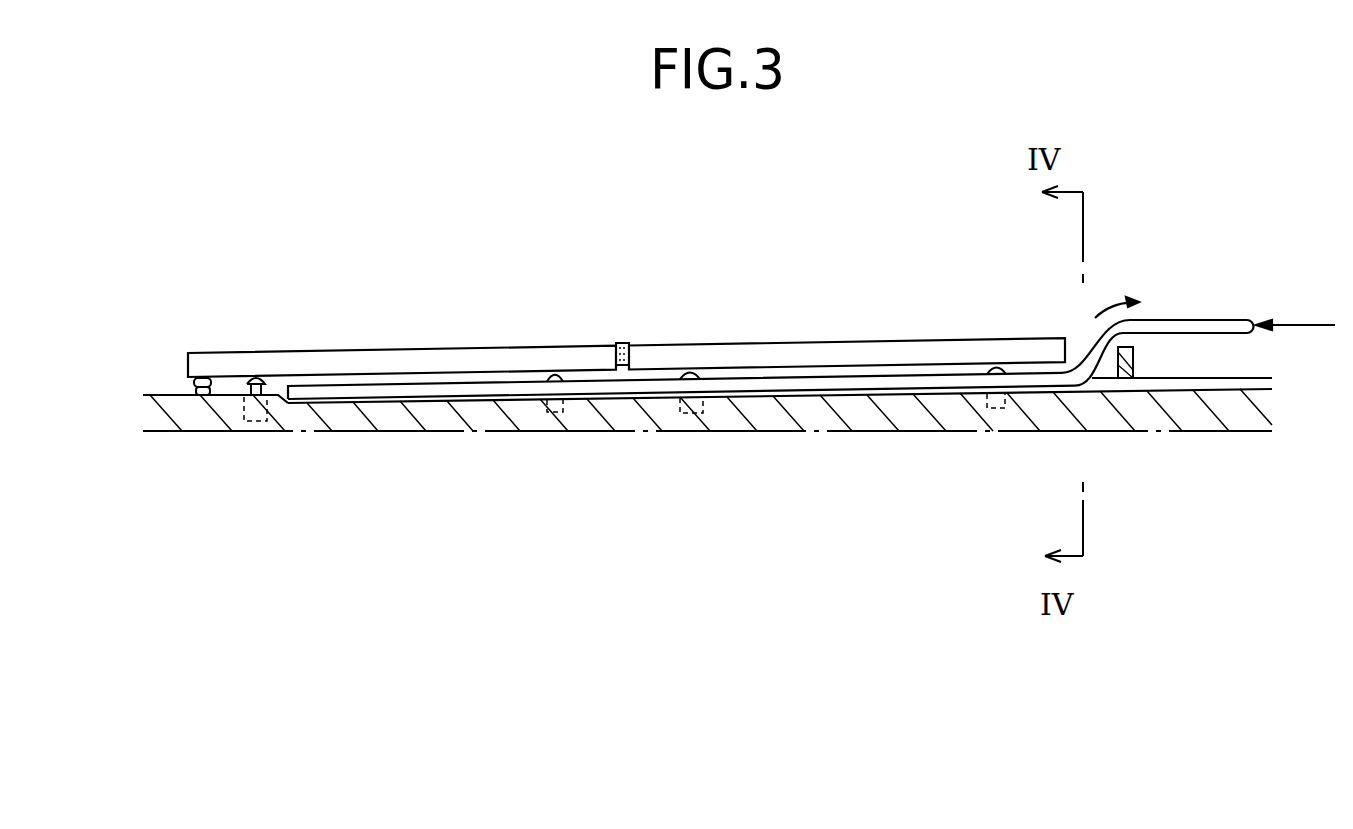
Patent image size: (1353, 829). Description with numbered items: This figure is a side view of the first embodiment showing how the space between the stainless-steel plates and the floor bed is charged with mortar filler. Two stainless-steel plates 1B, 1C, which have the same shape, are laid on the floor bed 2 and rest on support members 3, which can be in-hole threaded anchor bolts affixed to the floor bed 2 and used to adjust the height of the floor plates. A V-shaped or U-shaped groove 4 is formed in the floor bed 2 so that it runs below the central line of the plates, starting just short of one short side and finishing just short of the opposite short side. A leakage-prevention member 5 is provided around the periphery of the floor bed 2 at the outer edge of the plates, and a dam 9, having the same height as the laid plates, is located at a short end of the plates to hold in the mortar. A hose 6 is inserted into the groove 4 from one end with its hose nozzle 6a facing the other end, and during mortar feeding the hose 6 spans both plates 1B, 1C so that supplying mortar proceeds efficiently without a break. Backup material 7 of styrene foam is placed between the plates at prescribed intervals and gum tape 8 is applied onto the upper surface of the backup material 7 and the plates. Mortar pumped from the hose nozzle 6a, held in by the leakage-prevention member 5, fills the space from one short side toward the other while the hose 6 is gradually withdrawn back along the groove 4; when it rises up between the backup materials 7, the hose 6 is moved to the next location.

The stainless-steel plate 1B is at (897, 350).
The stainless-steel plate 1C is at (353, 355).
The floor bed 2 is at (619, 413).
The support member 3 is at (553, 372).
The groove 4 is at (813, 393).
The leakage-prevention member 5 is at (182, 380).
The hose 6 is at (1200, 320).
The hose nozzle 6a is at (302, 401).
The backup material 7 is at (630, 357).
The gum tape 8 is at (620, 343).
The dam 9 is at (1134, 359).